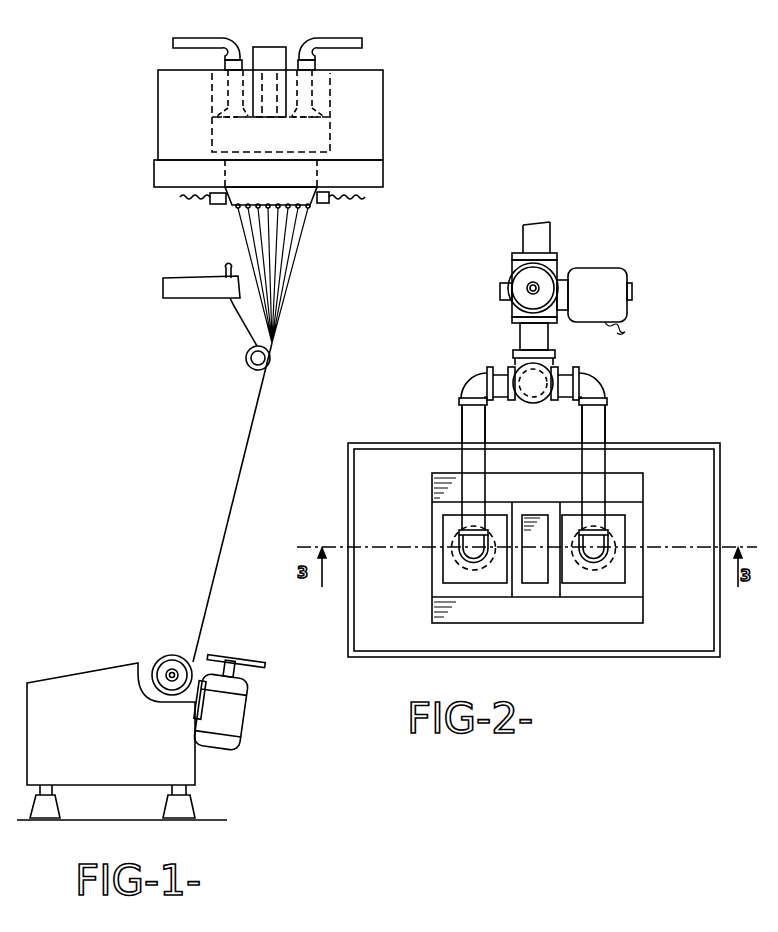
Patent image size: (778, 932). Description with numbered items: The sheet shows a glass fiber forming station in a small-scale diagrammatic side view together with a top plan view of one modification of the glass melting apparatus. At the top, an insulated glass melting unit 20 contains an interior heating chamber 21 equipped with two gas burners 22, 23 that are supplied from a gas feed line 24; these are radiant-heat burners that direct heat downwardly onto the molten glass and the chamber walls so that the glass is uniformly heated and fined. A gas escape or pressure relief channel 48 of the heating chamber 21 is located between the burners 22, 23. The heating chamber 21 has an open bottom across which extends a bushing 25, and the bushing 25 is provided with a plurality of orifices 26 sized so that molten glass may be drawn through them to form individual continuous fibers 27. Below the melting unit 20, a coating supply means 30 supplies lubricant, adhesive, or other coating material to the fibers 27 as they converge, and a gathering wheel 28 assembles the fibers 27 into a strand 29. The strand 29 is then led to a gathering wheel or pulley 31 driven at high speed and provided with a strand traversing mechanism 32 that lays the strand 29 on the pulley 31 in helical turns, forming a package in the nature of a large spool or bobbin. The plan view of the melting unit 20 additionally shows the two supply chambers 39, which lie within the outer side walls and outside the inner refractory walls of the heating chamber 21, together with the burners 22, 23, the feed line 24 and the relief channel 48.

In FIG. 1, the insulated glass melting unit 20 is at (383, 135).
In FIG. 2, the insulated glass melting unit 20 is at (637, 657).
In FIG. 1, the interior heating chamber 21 is at (327, 127).
In FIG. 1, the gas burner 22 is at (212, 110).
In FIG. 2, the gas burner 22 is at (455, 538).
In FIG. 1, the gas burner 23 is at (317, 108).
In FIG. 2, the gas burner 23 is at (615, 538).
In FIG. 1, the gas feed line 24 is at (350, 40).
In FIG. 2, the gas feed line 24 is at (600, 466).
In FIG. 1, the bushing 25 is at (319, 204).
In FIG. 1, the orifices 26 is at (228, 206).
In FIG. 1, the continuous fibers 27 is at (290, 262).
In FIG. 1, the gathering wheel 28 is at (246, 357).
In FIG. 1, the strand 29 is at (231, 512).
In FIG. 1, the coating supply means 30 is at (224, 306).
In FIG. 1, the gathering wheel or pulley 31 is at (166, 655).
In FIG. 1, the strand traversing mechanism 32 is at (208, 655).
In FIG. 2, the supply chambers 39 is at (544, 498).
In FIG. 1, the gas escape or pressure relief channel 48 is at (272, 40).
In FIG. 2, the gas escape or pressure relief channel 48 is at (528, 573).